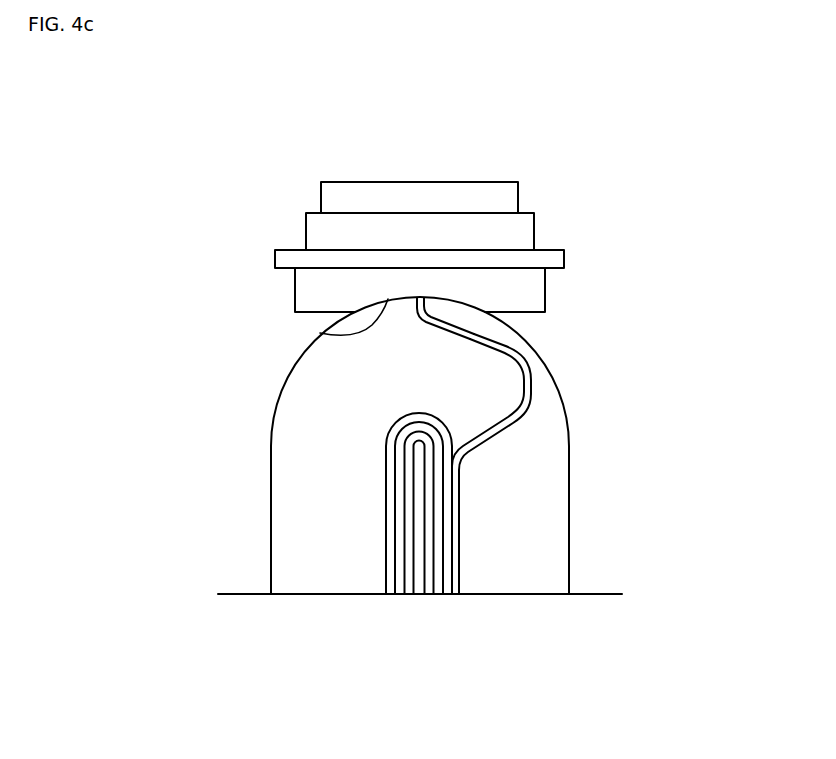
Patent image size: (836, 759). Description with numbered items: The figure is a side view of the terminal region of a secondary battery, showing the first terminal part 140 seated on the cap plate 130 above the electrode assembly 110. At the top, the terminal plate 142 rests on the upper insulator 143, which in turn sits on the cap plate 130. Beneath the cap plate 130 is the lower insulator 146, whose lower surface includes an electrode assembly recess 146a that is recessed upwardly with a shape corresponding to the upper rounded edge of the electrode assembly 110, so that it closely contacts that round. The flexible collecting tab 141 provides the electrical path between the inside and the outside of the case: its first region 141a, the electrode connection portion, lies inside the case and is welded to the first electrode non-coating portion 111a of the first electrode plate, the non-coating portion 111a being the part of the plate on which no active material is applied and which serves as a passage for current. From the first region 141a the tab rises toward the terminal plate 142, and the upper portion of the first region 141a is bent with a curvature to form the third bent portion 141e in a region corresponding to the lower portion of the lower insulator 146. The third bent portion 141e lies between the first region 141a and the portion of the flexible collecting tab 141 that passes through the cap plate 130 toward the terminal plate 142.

The first terminal part 140 is at (469, 173).
The terminal plate 142 is at (513, 196).
The upper insulator 143 is at (530, 233).
The cap plate 130 is at (564, 261).
The lower insulator 146 is at (428, 310).
The electrode assembly recess 146a is at (318, 333).
The electrode assembly 110 is at (397, 490).
The first electrode non-coating portion 111a is at (386, 554).
The flexible collecting tab 141 is at (519, 446).
The third bent portion 141e is at (529, 392).
The first region 141a is at (457, 545).